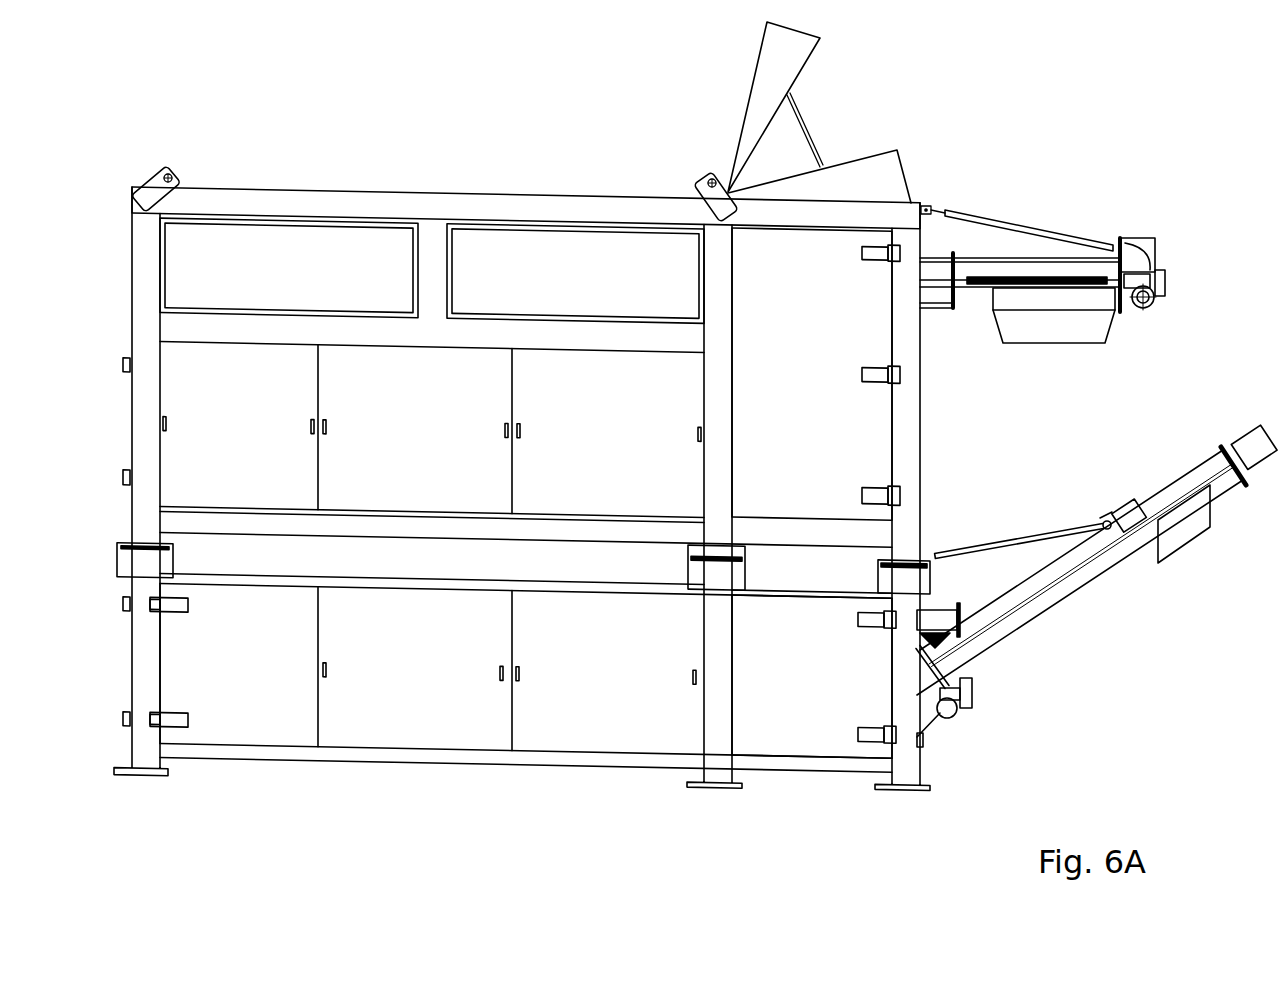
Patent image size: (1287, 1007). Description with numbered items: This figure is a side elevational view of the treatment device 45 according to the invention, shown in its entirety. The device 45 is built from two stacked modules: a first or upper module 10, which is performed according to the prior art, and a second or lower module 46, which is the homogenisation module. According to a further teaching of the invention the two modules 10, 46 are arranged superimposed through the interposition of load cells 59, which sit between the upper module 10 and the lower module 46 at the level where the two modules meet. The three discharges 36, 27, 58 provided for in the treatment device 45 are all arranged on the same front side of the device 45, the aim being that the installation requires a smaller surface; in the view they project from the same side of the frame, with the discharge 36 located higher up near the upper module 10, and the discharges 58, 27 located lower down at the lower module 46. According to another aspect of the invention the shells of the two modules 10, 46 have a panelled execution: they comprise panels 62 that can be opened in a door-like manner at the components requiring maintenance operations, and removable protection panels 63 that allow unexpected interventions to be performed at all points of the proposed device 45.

The upper module 10 is at (480, 202).
The treatment device 45 is at (345, 183).
The lower module 46 is at (128, 639).
The removable protection panels 63 is at (300, 367).
The load cells 59 is at (135, 563).
The panels 62 is at (760, 92).
The discharge 36 is at (1052, 333).
The discharge 58 is at (945, 617).
The discharge 27 is at (1182, 530).